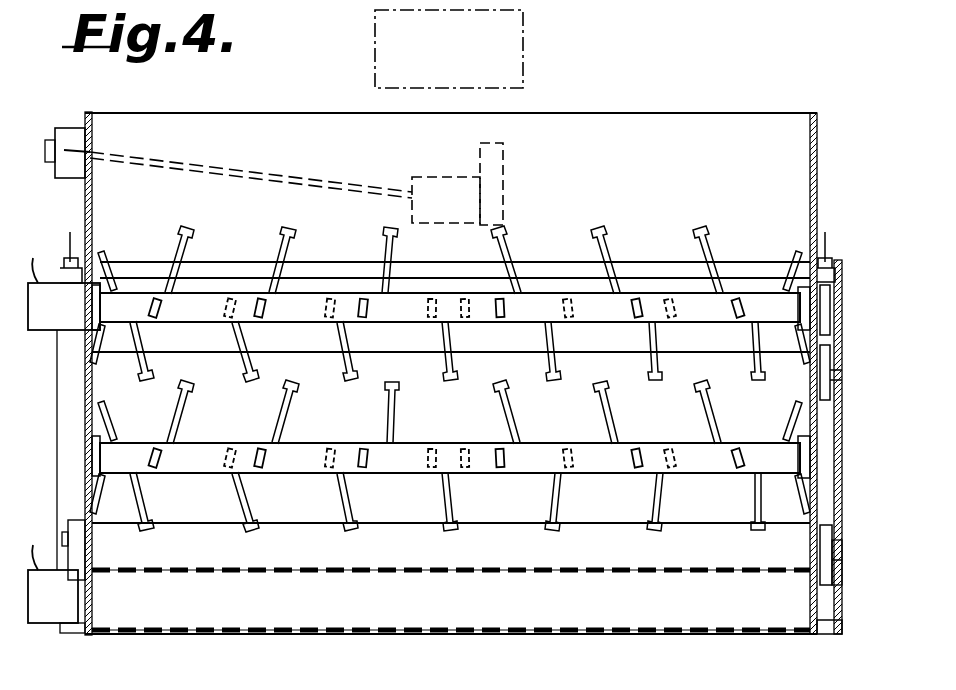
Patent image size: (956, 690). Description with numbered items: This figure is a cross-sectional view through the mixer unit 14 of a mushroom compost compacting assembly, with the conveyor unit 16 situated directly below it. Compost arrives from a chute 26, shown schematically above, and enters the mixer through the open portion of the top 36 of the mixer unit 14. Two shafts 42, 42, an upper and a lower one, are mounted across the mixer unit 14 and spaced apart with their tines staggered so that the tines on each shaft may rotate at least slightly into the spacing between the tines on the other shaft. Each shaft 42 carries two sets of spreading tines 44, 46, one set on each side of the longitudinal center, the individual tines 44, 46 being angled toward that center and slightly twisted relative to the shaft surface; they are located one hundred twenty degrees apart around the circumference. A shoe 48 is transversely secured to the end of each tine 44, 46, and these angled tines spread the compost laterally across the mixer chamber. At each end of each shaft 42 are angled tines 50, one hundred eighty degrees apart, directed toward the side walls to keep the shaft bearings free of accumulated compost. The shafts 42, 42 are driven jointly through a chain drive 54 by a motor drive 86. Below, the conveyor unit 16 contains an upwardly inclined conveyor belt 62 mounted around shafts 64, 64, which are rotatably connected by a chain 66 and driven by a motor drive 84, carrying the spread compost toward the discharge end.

The mixer unit 14 is at (818, 128).
The conveyor unit 16 is at (82, 497).
The chute 26 is at (540, 62).
The open top of mixer unit 36 is at (684, 137).
The shaft 42 is at (485, 325).
The spreading tine 44 is at (600, 240).
The spreading tine 46 is at (384, 264).
The shoe 48 is at (700, 230).
The angled end tine 50 is at (101, 262).
The chain drive 54 is at (834, 398).
The conveyor belt 62 is at (228, 633).
The conveyor shaft 64 is at (345, 605).
The chain 66 is at (838, 612).
The motor drive 84 is at (46, 610).
The motor drive 86 is at (50, 288).